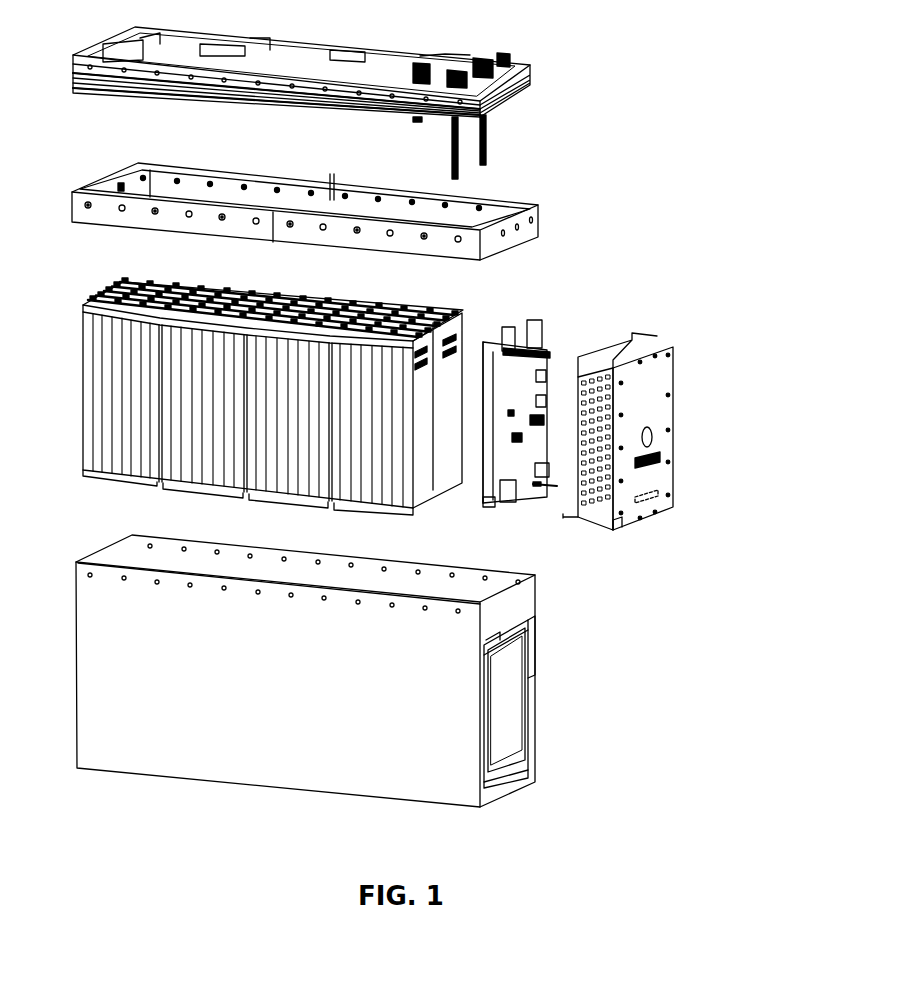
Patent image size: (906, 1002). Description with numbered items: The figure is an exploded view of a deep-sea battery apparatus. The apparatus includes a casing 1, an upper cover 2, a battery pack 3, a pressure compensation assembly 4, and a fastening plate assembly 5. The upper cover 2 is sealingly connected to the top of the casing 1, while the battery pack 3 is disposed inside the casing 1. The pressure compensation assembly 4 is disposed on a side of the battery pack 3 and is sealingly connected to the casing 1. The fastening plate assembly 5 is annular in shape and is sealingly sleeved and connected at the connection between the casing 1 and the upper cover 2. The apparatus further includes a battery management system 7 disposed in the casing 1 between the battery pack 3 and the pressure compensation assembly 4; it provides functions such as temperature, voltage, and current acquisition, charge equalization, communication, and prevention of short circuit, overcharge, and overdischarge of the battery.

The casing 1 is at (468, 625).
The upper cover 2 is at (533, 70).
The battery pack 3 is at (448, 380).
The pressure compensation assembly 4 is at (687, 417).
The fastening plate assembly 5 is at (547, 208).
The battery management system 7 is at (524, 516).